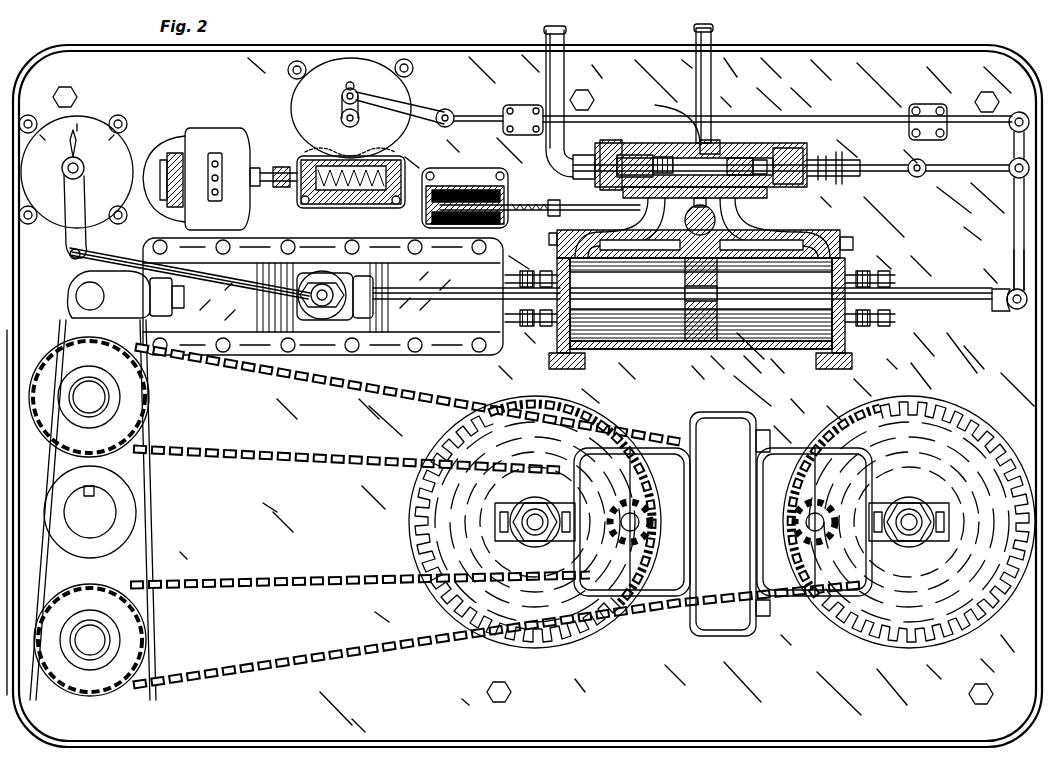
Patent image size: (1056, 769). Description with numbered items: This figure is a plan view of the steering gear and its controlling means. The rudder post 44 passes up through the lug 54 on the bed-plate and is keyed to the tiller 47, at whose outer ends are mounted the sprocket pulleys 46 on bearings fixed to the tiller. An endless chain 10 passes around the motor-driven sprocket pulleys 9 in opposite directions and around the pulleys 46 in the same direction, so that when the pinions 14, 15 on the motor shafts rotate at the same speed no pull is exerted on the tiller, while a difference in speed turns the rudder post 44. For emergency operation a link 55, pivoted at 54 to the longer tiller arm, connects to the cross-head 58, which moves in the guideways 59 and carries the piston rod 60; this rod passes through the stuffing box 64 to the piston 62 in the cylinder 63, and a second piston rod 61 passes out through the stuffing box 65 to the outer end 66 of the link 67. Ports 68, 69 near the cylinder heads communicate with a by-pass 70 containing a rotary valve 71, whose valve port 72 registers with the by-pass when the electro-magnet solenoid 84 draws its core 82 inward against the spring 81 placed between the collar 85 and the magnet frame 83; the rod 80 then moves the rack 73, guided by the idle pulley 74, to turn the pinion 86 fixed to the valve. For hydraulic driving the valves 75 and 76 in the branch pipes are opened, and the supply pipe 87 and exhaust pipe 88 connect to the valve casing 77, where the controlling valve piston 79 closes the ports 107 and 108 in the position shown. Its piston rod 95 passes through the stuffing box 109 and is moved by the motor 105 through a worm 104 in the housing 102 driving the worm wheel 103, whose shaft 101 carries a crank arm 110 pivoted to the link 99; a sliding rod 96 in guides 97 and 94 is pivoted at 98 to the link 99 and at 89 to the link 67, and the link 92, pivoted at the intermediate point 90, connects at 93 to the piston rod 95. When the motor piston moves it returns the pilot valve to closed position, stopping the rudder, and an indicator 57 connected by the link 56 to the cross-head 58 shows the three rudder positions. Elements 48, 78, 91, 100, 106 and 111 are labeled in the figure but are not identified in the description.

The sprocket pulley 9 is at (490, 495).
The endless chain 10 is at (300, 655).
The pinion 14 is at (622, 502).
The pinion 15 is at (822, 505).
The rudder post 44 is at (118, 514).
The sprocket pulley 46 is at (122, 664).
The tiller 47 is at (150, 528).
The shaft 48 is at (90, 640).
The lug 54 is at (80, 292).
The link 55 is at (245, 246).
The link 56 is at (100, 256).
The indicator 57 is at (76, 157).
The cross-head 58 is at (308, 250).
The guideways 59 is at (380, 250).
The piston rod 60 is at (480, 305).
The piston rod 61 is at (950, 296).
The piston 62 is at (700, 345).
The cylinder 63 is at (622, 350).
The stuffing box 64 is at (556, 248).
The stuffing box 65 is at (858, 275).
The outer end 66 is at (1014, 310).
The link 67 is at (1012, 246).
The port 68 is at (556, 238).
The port 69 is at (848, 236).
The by-pass 70 is at (836, 224).
The rotary valve 71 is at (806, 204).
The valve port 72 is at (698, 236).
The rack 73 is at (750, 192).
The idle pulley 74 is at (745, 170).
The valve 75 is at (632, 190).
The valve 76 is at (780, 150).
The valve casing 77 is at (648, 156).
The valve 78 is at (664, 156).
The controlling valve piston 79 is at (724, 150).
The rod 80 is at (620, 206).
The spring 81 is at (544, 204).
The core 82 is at (500, 150).
The magnet frame 83 is at (470, 183).
The electro-magnet solenoid 84 is at (442, 188).
The collar 85 is at (572, 204).
The pinion 86 is at (790, 208).
The supply pipe 87 is at (714, 44).
The exhaust pipe 88 is at (566, 44).
The end of link 89 is at (1018, 112).
The intermediate point 90 is at (1010, 162).
The link 91 is at (1014, 132).
The link 92 is at (970, 176).
The pivot 93 is at (942, 160).
The guide 94 is at (926, 108).
The piston rod 95 is at (870, 166).
The sliding rod 96 is at (826, 118).
The guide 97 is at (528, 105).
The pivot end 98 is at (452, 112).
The link 99 is at (400, 102).
The pin 100 is at (360, 88).
The shaft 101 is at (360, 118).
The housing 102 is at (305, 76).
The worm wheel 103 is at (365, 148).
The worm 104 is at (333, 205).
The motor 105 is at (225, 135).
The pipe 106 is at (682, 130).
The port 107 is at (590, 155).
The port 108 is at (762, 160).
The stuffing box 109 is at (818, 156).
The crank arm 110 is at (342, 96).
The pointer 111 is at (85, 166).